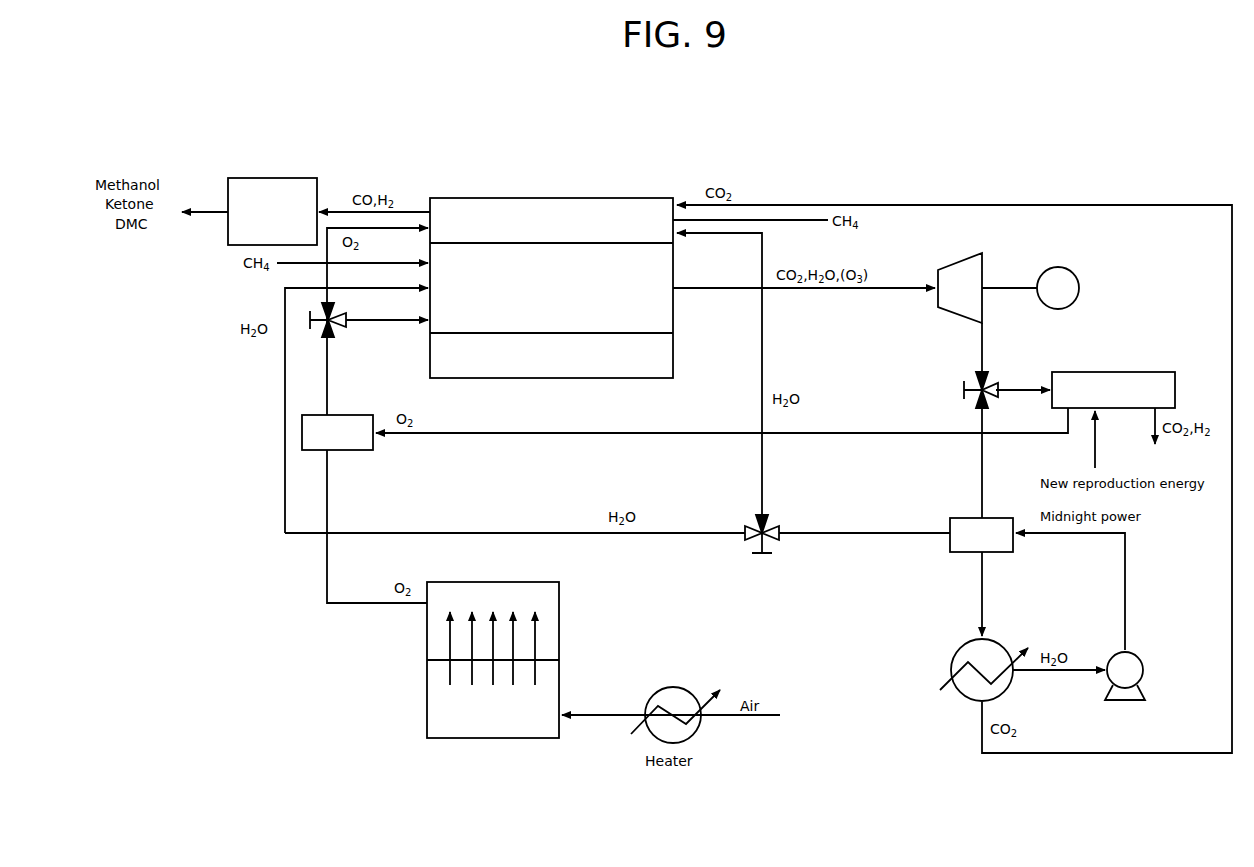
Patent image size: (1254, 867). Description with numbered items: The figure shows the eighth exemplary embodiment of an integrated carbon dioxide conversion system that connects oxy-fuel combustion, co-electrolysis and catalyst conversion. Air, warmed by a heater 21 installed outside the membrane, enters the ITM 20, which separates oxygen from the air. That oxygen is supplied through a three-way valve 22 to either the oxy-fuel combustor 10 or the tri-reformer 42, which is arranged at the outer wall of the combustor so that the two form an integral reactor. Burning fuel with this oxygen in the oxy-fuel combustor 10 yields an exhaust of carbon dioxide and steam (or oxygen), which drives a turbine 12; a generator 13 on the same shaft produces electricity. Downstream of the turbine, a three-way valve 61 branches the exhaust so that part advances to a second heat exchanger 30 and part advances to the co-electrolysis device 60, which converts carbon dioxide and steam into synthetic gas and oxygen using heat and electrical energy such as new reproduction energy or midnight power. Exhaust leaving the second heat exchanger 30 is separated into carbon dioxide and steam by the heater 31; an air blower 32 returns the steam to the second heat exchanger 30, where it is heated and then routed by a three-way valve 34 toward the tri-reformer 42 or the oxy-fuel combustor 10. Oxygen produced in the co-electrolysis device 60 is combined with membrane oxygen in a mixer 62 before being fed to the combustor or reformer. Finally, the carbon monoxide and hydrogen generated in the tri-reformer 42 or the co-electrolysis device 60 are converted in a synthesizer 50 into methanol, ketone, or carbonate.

The oxy-fuel combustor 10 is at (673, 312).
The turbine 12 is at (980, 253).
The generator 13 is at (1080, 282).
The ITM 20 is at (560, 597).
The heater 21 is at (673, 687).
The 3-way valve 22 is at (318, 331).
The second heat exchanger 30 is at (1000, 552).
The heater 31 is at (958, 695).
The air blower 32 is at (1143, 671).
The 3-way valve 34 is at (770, 540).
The tri-reformer 42 is at (544, 198).
The synthesizer 50 is at (268, 178).
The co-electrolysis device 60 is at (1133, 372).
The 3-way valve 61 is at (975, 387).
The mixer 62 is at (355, 415).